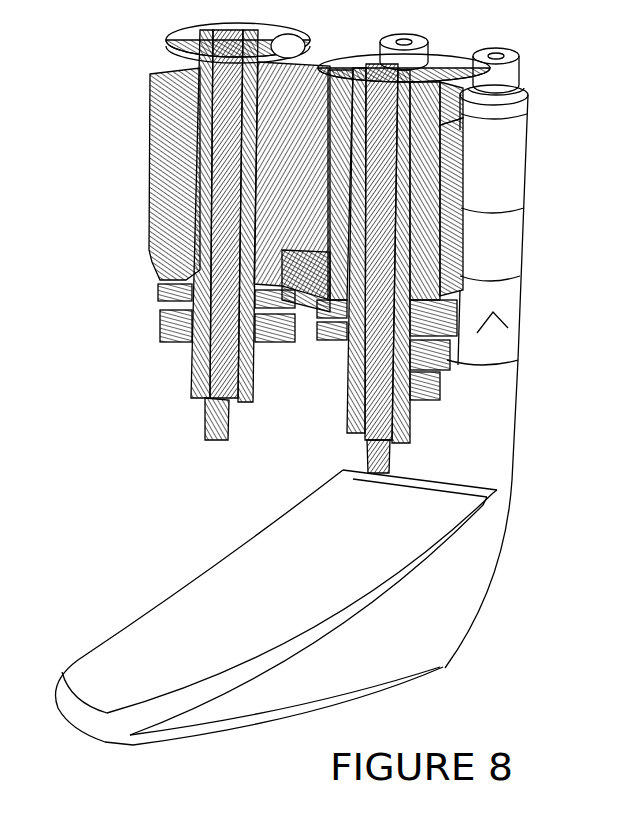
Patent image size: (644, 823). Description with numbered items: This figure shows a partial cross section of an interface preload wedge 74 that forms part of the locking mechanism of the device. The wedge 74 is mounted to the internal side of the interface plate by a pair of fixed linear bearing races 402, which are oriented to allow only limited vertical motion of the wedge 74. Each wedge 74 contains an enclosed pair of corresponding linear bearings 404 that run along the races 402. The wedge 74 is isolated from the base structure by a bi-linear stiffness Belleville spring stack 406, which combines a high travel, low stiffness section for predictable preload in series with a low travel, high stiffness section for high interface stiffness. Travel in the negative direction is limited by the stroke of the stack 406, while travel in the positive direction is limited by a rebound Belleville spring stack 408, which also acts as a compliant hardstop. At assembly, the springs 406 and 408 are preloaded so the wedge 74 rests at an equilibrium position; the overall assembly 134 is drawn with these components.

The actuator stack 134 is at (137, 227).
The fixed linear bearing races 402 is at (152, 131).
The linear bearings 404 is at (160, 155).
The bi-linear stiffness Belleville spring stack 406 is at (157, 313).
The rebound Belleville spring stack 408 is at (328, 31).
The interface preload wedge 74 is at (427, 597).